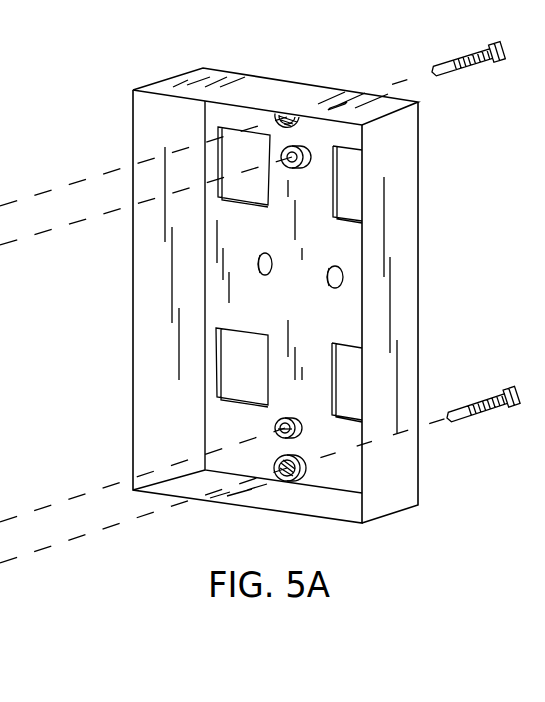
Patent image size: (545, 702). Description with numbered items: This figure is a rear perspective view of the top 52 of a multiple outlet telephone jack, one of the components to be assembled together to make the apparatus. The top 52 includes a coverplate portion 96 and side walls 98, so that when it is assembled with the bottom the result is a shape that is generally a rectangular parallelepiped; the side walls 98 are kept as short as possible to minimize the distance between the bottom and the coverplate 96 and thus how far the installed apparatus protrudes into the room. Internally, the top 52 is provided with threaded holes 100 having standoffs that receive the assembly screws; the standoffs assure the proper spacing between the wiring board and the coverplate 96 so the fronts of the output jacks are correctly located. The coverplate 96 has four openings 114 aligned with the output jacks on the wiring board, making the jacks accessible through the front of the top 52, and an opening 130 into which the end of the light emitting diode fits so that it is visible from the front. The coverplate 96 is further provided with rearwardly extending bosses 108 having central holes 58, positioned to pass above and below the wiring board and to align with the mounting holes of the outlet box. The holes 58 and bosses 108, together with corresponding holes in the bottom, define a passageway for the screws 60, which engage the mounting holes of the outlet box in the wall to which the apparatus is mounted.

The top 52 is at (276, 95).
The central holes 58 is at (277, 482).
The screws 60 is at (481, 52).
The coverplate 96 is at (306, 310).
The side walls 98 is at (402, 158).
The threaded holes 100 is at (281, 157).
The bosses 108 is at (303, 471).
The openings 114 is at (243, 372).
The opening 130 is at (258, 264).